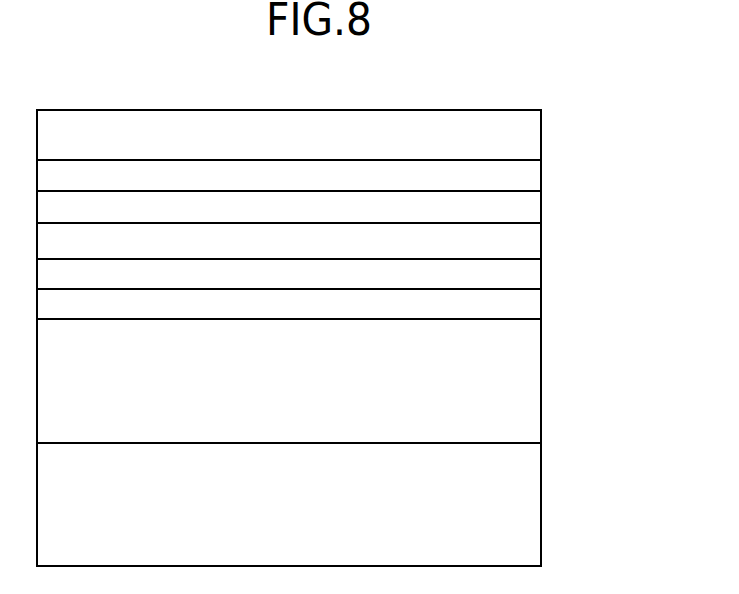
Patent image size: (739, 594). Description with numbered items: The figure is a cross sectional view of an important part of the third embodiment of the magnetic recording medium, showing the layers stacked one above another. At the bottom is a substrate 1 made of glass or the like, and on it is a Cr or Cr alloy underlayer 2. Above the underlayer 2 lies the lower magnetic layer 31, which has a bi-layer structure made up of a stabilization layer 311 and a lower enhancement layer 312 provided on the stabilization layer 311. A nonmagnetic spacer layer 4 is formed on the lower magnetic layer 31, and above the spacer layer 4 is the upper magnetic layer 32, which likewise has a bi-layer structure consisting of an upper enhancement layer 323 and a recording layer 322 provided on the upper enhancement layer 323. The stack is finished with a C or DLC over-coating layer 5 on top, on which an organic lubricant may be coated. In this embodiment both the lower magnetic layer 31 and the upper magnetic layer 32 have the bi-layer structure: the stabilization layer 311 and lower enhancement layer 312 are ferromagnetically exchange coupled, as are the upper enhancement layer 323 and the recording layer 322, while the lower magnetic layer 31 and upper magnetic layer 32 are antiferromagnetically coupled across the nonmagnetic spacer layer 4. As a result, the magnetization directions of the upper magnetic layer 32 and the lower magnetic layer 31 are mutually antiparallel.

The substrate 1 is at (541, 496).
The underlayer 2 is at (541, 383).
The lower magnetic layer 31 is at (367, 293).
The stabilization layer 311 is at (541, 308).
The lower enhancement layer 312 is at (541, 274).
The nonmagnetic spacer layer 4 is at (541, 243).
The upper magnetic layer 32 is at (368, 194).
The upper enhancement layer 323 is at (541, 213).
The recording layer 322 is at (541, 181).
The over-coating layer 5 is at (541, 138).